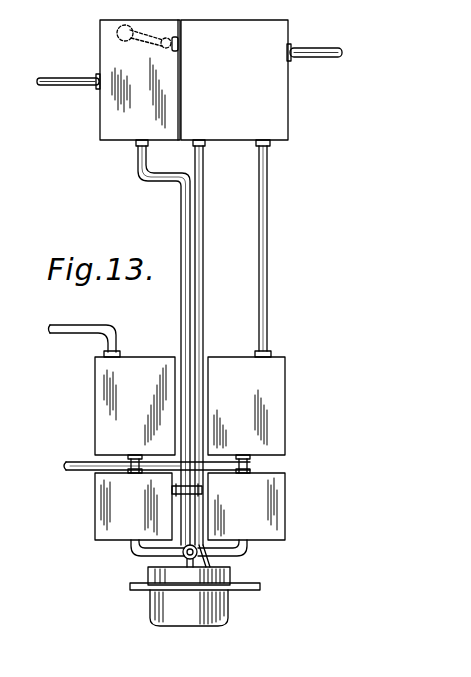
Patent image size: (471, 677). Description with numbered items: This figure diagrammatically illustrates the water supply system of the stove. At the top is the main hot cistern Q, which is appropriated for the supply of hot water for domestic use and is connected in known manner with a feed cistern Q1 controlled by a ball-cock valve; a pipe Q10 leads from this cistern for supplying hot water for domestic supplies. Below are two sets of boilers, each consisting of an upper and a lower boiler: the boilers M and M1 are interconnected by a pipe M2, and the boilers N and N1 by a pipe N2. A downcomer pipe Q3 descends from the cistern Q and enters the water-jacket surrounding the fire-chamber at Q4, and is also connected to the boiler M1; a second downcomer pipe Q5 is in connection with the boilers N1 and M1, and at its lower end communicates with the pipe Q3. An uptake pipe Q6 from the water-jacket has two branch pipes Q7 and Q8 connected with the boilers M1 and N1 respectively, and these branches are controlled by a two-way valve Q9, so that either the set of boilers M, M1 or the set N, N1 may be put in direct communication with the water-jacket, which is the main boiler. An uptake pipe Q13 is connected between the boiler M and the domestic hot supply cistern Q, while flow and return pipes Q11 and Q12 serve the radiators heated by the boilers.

The main hot cistern Q is at (268, 75).
The feed cistern Q1 is at (103, 135).
The downcomer pipe Q3 is at (205, 208).
The water-jacket entry point Q4 is at (198, 558).
The downcomer pipe Q5 is at (180, 230).
The uptake pipe Q6 is at (182, 562).
The branch pipe Q7 is at (240, 546).
The branch pipe Q8 is at (140, 549).
The two-way valve Q9 is at (232, 587).
The hot water supply pipe Q10 is at (316, 38).
The flow pipe Q11 is at (60, 341).
The return pipe Q12 is at (78, 471).
The uptake pipe Q13 is at (268, 183).
The upper boiler N is at (135, 406).
The lower boiler N1 is at (133, 506).
The connecting pipe N2 is at (127, 458).
The upper boiler M is at (246, 406).
The lower boiler M1 is at (246, 506).
The connecting pipe M2 is at (250, 461).